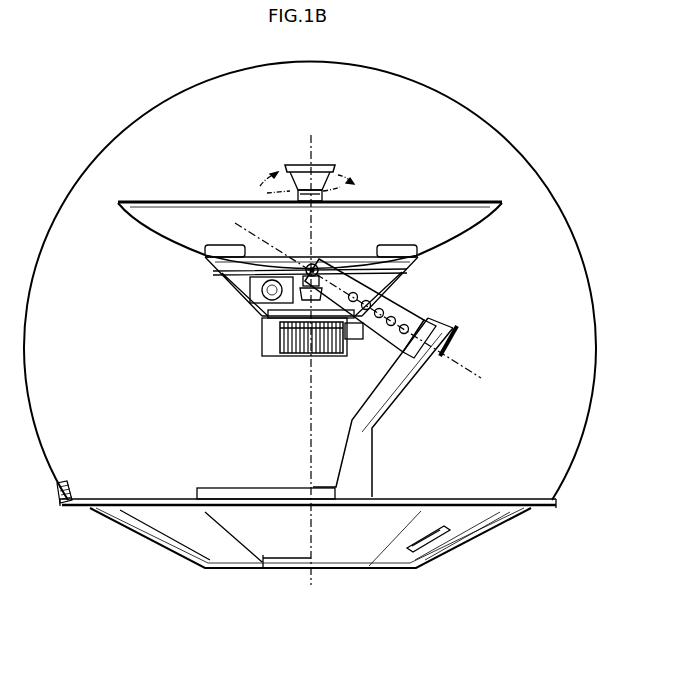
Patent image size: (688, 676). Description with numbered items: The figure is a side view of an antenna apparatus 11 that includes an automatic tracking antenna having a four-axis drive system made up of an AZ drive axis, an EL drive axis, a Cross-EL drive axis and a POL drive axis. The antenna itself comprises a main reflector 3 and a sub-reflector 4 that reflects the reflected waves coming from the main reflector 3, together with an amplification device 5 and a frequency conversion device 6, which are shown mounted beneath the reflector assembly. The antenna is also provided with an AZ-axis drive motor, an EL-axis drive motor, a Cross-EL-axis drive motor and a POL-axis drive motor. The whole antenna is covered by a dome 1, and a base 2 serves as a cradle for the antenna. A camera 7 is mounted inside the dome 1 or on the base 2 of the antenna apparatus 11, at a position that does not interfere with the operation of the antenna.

The dome 1 is at (514, 150).
The base 2 is at (500, 530).
The main reflector 3 is at (197, 201).
The sub-reflector 4 is at (332, 165).
The amplification device 5 is at (282, 361).
The frequency conversion device 6 is at (278, 355).
The camera 7 is at (66, 490).
The antenna apparatus 11 is at (310, 322).